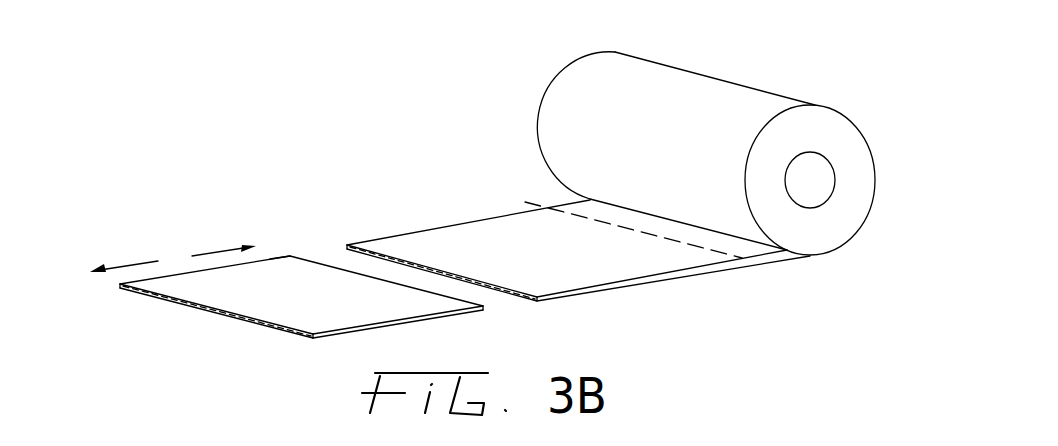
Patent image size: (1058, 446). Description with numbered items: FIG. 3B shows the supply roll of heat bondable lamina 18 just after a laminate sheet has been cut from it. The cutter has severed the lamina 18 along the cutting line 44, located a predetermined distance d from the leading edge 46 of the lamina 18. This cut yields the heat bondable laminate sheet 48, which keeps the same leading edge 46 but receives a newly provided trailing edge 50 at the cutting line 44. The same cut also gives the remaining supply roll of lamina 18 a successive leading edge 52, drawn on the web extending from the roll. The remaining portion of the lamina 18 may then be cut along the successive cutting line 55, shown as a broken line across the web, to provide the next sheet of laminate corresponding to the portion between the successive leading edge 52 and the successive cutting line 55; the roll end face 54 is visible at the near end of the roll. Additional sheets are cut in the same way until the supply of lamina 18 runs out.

The heat bondable lamina 18 is at (677, 130).
The cutting line 44 is at (286, 263).
The leading edge 46 is at (197, 305).
The heat bondable laminate sheet 48 is at (362, 311).
The trailing edge 50 is at (264, 250).
The successive leading edge 52 is at (578, 223).
The roll end face 54 is at (558, 110).
The successive cutting line 55 is at (529, 195).